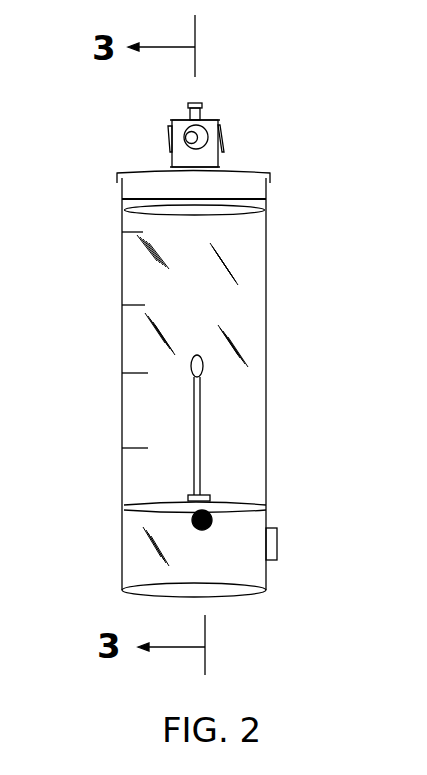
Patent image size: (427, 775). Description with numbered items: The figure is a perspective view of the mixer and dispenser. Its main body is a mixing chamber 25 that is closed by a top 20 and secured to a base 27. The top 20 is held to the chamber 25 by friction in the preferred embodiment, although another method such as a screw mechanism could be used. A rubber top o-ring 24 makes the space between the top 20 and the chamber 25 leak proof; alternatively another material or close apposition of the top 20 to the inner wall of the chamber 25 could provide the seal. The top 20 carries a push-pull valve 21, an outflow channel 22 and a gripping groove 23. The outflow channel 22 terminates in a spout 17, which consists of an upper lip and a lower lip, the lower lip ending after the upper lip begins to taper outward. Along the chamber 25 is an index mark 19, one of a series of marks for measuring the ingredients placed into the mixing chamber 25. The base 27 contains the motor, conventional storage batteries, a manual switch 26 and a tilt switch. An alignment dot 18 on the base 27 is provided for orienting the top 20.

The spout 17 is at (184, 153).
The alignment dot 18 is at (192, 520).
The index mark 19 is at (122, 305).
The top 20 is at (157, 136).
The push-pull valve 21 is at (200, 107).
The outflow channel 22 is at (198, 137).
The gripping groove 23 is at (222, 147).
The top o-ring 24 is at (266, 199).
The chamber 25 is at (276, 354).
The manual switch 26 is at (278, 540).
The base 27 is at (105, 574).